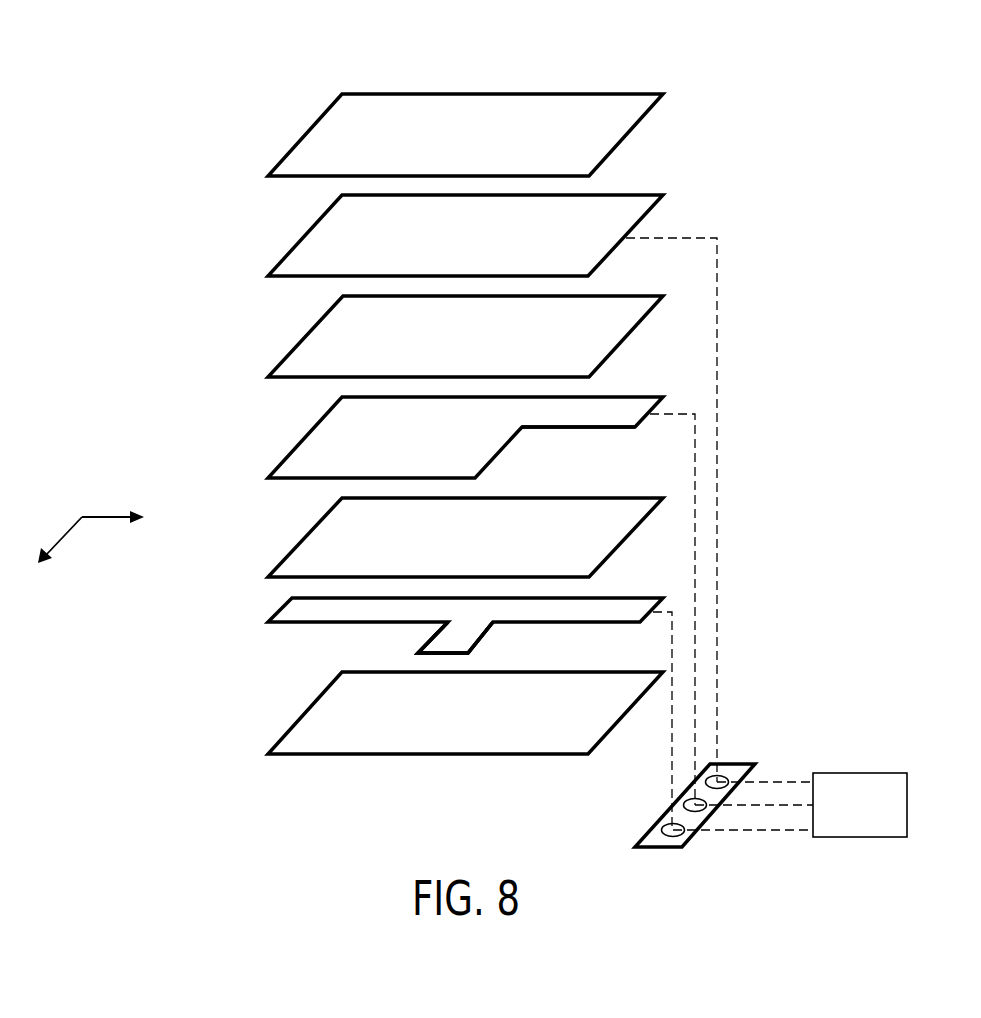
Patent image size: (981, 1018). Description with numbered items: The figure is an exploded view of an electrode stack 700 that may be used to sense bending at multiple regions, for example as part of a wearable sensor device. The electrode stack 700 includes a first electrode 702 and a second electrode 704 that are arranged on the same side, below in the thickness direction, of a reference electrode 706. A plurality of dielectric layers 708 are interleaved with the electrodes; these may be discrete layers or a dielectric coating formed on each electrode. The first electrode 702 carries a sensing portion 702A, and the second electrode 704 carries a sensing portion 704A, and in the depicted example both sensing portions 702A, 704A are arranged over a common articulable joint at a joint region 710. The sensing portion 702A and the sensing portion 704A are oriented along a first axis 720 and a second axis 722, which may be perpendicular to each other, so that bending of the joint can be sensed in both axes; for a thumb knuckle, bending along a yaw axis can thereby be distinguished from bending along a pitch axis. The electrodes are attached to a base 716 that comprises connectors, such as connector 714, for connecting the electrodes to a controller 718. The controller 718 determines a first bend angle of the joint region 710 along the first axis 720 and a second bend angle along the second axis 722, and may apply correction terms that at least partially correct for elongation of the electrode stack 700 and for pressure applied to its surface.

The electrode stack 700 is at (601, 58).
The first electrode 702 is at (268, 478).
The sensing portion of first electrode 702A is at (606, 410).
The second electrode 704 is at (268, 621).
The sensing portion of second electrode 704A is at (451, 638).
The reference electrode 706 is at (268, 276).
The dielectric layers 708 is at (268, 176).
The joint region 710 is at (494, 644).
The connector 714 is at (664, 830).
The base 716 is at (660, 847).
The controller 718 is at (876, 817).
The first axis 720 is at (102, 515).
The second axis 722 is at (57, 543).